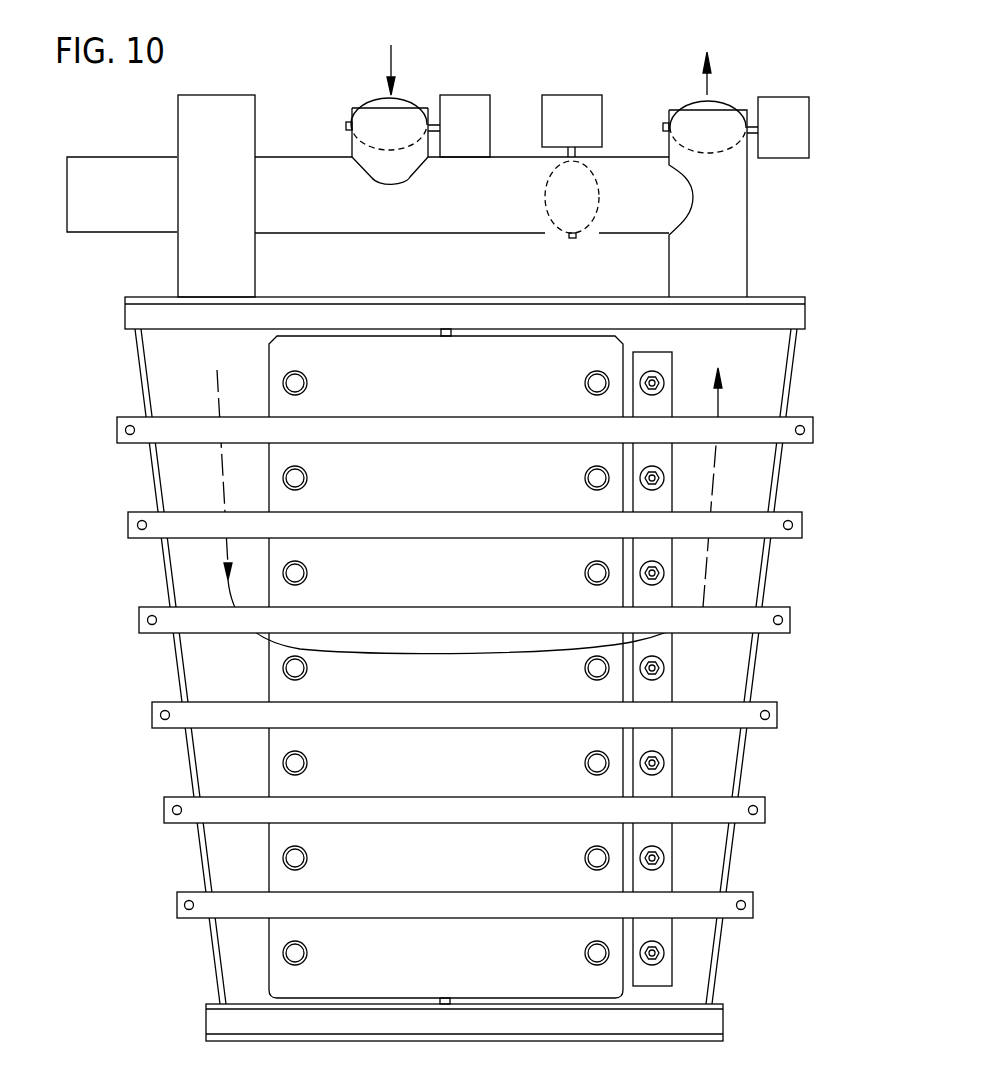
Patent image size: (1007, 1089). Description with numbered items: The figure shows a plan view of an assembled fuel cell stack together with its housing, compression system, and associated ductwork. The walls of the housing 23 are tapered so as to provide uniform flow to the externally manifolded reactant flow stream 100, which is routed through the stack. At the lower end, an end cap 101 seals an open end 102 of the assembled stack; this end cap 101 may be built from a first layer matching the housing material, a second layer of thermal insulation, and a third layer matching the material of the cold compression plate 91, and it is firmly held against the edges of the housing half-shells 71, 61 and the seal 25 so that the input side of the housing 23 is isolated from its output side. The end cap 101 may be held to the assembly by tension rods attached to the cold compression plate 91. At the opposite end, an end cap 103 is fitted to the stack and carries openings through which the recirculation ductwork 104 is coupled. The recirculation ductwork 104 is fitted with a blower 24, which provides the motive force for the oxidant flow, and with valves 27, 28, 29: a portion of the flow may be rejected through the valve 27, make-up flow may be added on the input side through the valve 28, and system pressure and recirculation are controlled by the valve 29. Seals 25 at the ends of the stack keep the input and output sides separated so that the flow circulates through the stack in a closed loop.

The housing 23 is at (516, 666).
The blower 24 is at (160, 160).
The seal 25 is at (451, 328).
The valve 27 is at (794, 99).
The valve 28 is at (463, 95).
The valve 29 is at (580, 95).
The housing half-shell 61 is at (496, 667).
The housing half-shell 71 is at (743, 764).
The cold compression plate 91 is at (270, 942).
The externally manifolded reactant flow stream 100 is at (223, 466).
The end cap 101 is at (725, 1015).
The open end 102 is at (717, 998).
The end cap 103 is at (780, 297).
The recirculation ductwork 104 is at (748, 205).